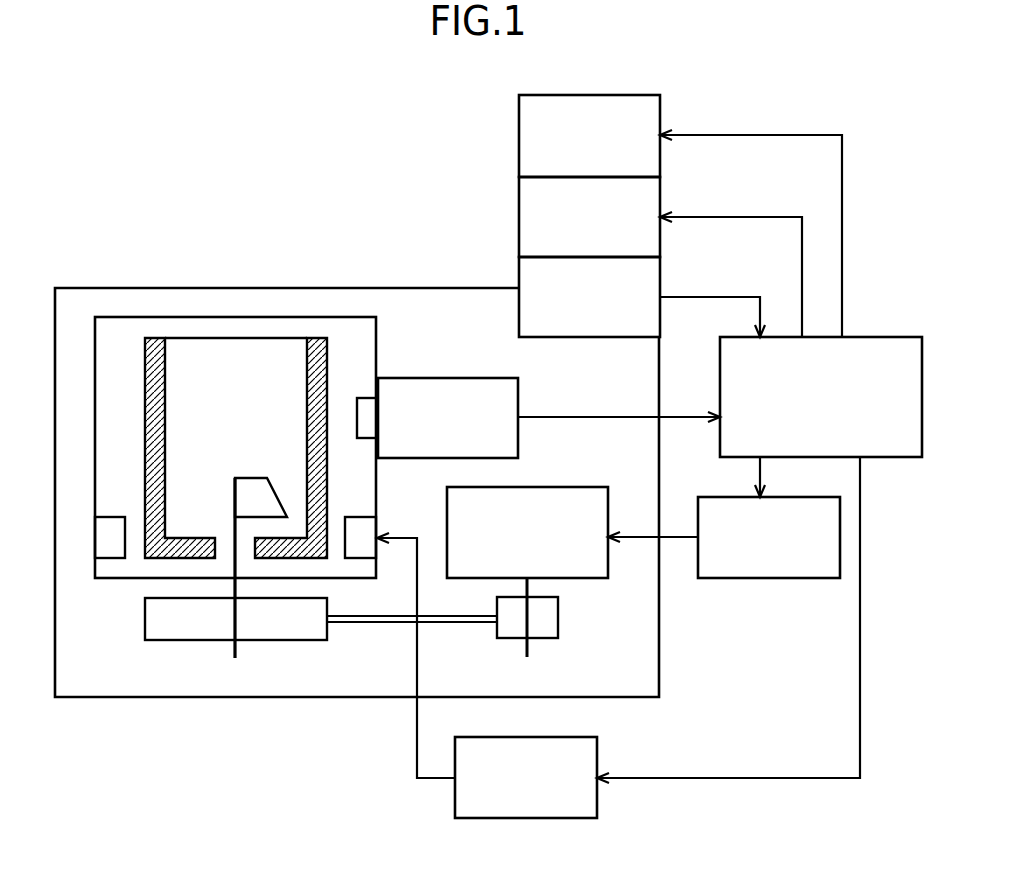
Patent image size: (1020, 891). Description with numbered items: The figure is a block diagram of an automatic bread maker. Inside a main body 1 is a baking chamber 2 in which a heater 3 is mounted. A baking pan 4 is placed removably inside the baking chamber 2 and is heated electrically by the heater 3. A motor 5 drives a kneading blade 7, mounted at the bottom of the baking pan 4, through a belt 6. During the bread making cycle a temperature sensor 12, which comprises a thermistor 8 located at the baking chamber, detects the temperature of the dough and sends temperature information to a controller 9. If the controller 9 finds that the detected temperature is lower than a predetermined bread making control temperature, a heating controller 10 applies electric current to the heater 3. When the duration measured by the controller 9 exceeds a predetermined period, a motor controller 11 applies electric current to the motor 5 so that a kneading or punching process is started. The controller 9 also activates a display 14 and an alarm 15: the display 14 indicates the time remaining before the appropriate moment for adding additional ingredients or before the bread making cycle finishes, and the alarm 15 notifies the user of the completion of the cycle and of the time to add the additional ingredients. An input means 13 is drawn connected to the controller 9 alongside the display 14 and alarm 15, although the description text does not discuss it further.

The main body 1 is at (235, 288).
The baking chamber 2 is at (127, 317).
The heater 3 is at (115, 560).
The baking pan 4 is at (145, 427).
The motor 5 is at (588, 580).
The belt 6 is at (430, 623).
The kneading blade 7 is at (253, 478).
The thermistor 8 is at (368, 397).
The controller 9 is at (862, 335).
The heating controller 10 is at (598, 753).
The motor controller 11 is at (790, 578).
The temperature sensor 12 is at (408, 377).
The input means 13 is at (519, 277).
The display 14 is at (519, 197).
The alarm 15 is at (519, 115).